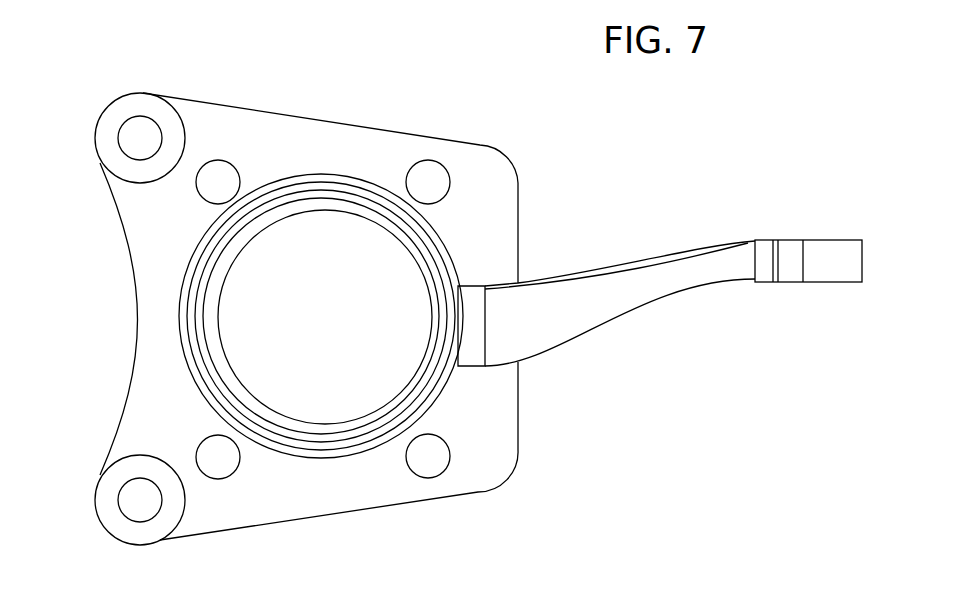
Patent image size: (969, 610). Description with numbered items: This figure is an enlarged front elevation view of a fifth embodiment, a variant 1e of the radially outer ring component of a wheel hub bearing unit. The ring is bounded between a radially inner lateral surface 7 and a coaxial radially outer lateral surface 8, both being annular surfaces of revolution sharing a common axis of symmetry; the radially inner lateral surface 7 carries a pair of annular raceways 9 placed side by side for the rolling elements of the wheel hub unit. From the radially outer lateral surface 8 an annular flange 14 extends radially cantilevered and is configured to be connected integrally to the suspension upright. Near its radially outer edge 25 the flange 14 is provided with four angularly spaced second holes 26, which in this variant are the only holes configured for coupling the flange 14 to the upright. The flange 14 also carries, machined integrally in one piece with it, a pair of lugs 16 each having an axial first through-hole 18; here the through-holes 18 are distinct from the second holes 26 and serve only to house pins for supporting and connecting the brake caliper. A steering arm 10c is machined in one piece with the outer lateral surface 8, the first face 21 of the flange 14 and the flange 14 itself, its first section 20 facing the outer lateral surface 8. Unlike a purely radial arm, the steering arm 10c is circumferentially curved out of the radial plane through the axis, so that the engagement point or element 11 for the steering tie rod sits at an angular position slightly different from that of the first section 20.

The variant of the outer ring component 1e is at (621, 372).
The radially inner lateral surface 7 is at (227, 280).
The radially outer lateral surface 8 is at (298, 172).
The annular raceway 9 is at (197, 313).
The steering arm 10c is at (653, 287).
The engagement point or element 11 is at (838, 238).
The flange 14 is at (383, 162).
The lugs or studs 16 is at (133, 192).
The first through-hole 18 is at (143, 148).
The first section of the steering arm 20 is at (475, 320).
The first face of the flange 21 is at (322, 146).
The radially outer edge 25 is at (519, 207).
The second holes 26 is at (218, 180).